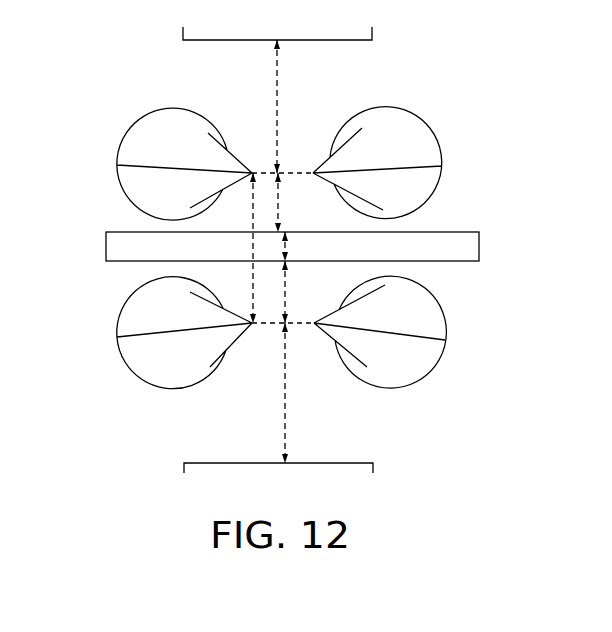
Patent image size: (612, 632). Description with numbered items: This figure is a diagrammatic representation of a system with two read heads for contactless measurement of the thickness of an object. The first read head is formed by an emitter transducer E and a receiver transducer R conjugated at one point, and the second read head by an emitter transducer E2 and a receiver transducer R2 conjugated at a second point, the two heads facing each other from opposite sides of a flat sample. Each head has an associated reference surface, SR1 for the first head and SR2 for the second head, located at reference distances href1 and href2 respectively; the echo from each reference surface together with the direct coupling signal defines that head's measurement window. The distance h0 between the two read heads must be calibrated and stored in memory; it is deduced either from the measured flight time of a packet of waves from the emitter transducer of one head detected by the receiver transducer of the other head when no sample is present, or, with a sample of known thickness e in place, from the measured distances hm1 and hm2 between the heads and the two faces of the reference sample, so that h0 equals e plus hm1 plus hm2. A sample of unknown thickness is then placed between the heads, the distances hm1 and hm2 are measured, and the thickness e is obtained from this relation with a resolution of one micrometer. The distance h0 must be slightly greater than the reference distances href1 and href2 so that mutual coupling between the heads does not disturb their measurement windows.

The emitter transducer E is at (142, 182).
The receiver transducer R is at (412, 189).
The receiver transducer of second head R2 is at (140, 318).
The emitter transducer of second head E2 is at (415, 307).
The first reference surface SR1 is at (277, 27).
The second reference surface SR2 is at (278, 476).
The first reference distance href1 is at (302, 106).
The first measured distance hm1 is at (299, 202).
The distance between read heads h0 is at (239, 248).
The thickness of the object e is at (290, 246).
The second measured distance hm2 is at (305, 292).
The second reference distance href2 is at (311, 393).